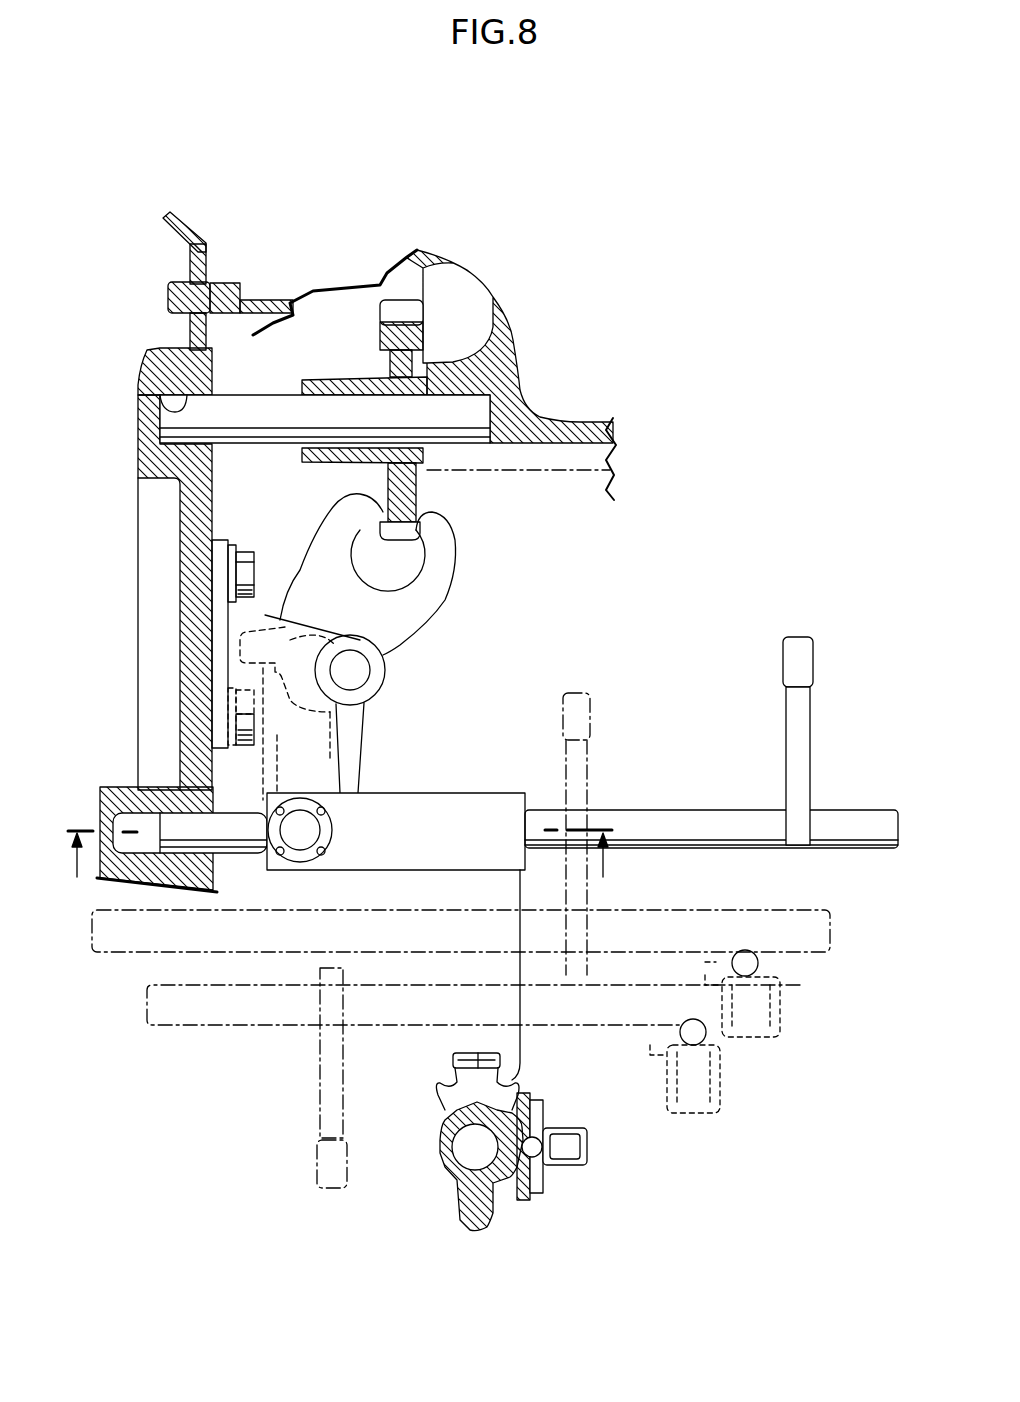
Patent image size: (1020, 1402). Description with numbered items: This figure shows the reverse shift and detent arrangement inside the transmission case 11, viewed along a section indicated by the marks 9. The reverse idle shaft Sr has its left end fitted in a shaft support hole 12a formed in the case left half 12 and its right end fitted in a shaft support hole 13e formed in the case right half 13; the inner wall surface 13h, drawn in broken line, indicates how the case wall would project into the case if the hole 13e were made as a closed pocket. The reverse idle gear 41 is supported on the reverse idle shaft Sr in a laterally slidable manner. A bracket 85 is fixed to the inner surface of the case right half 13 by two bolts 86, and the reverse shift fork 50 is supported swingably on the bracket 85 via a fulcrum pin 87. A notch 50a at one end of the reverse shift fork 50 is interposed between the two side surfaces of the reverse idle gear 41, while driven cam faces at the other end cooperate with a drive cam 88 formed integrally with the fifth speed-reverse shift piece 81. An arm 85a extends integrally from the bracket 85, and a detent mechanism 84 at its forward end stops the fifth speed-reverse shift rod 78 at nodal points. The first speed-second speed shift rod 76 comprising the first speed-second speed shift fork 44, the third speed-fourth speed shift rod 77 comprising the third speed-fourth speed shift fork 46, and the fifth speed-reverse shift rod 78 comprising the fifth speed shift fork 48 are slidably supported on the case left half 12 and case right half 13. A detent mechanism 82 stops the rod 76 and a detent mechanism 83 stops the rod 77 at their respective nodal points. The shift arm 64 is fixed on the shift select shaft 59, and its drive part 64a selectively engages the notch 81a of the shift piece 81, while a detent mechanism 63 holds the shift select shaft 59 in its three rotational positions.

The transmission case 11 is at (384, 150).
The case left half 12 is at (197, 242).
The shaft support hole 12a is at (148, 407).
The case right half 13 is at (240, 283).
The shaft support hole 13e is at (493, 410).
The inner wall surface 13h is at (587, 483).
The reverse idle gear 41 is at (412, 310).
The reverse idle shaft Sr is at (220, 413).
The reverse shift fork 50 is at (472, 570).
The notch 50a is at (362, 527).
The fulcrum pin 87 is at (360, 670).
The bracket 85 is at (362, 748).
The arm 85a is at (340, 797).
The detent mechanism 84 is at (300, 878).
The drive cam 88 is at (252, 748).
The bolts 86 is at (247, 579).
The section line 9 is at (341, 874).
The fifth speed-reverse shift rod 78 is at (647, 813).
The fifth speed shift fork 48 is at (795, 652).
The third speed-fourth speed shift fork 46 is at (573, 702).
The third speed-fourth speed shift rod 77 is at (808, 948).
The first speed-second speed shift rod 76 is at (597, 1012).
The first speed-second speed shift fork 44 is at (320, 1120).
The fifth speed-reverse shift piece 81 is at (422, 1041).
The notch 81a is at (500, 1083).
The drive part 64a is at (463, 1072).
The shift arm 64 is at (458, 1226).
The shift select shaft 59 is at (473, 1147).
The detent mechanism 63 is at (568, 1175).
The detent mechanism 83 is at (790, 1045).
The detent mechanism 82 is at (725, 1088).